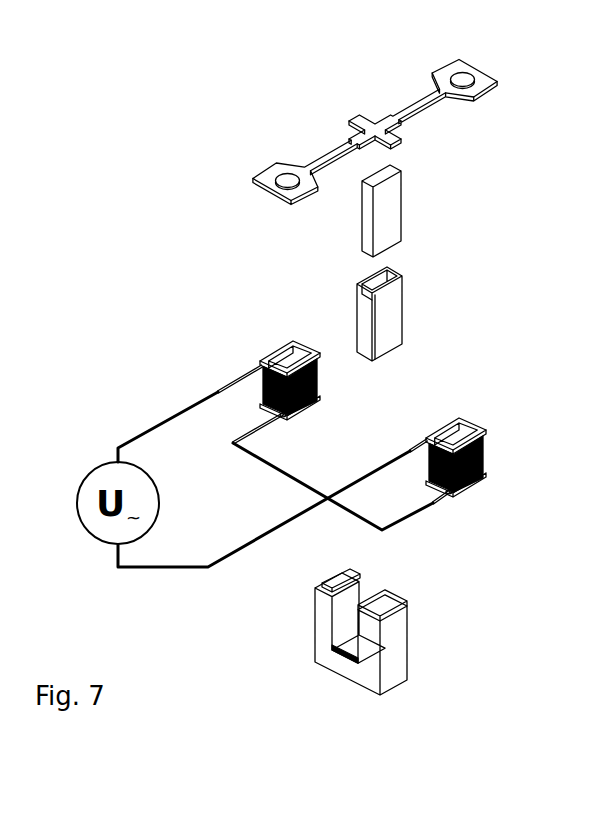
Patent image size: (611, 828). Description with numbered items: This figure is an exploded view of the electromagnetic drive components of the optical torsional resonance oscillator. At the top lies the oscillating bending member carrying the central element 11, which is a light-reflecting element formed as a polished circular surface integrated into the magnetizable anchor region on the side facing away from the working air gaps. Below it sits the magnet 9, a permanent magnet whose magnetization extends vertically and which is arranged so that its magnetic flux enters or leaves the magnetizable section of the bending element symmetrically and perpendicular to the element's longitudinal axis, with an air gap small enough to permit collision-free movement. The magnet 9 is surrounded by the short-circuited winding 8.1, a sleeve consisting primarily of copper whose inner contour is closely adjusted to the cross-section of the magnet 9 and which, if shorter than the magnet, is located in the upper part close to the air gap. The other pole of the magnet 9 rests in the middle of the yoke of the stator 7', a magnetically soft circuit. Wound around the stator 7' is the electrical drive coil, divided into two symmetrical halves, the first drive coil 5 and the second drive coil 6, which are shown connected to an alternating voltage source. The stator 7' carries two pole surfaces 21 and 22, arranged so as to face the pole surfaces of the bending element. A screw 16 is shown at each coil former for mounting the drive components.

The central element 11 is at (373, 124).
The magnet 9 is at (390, 228).
The short-circuited winding 8.1 is at (395, 312).
The screw 16 is at (287, 352).
The first drive coil 5 is at (263, 397).
The second drive coil 6 is at (483, 447).
The stator 7' is at (429, 634).
The free end of the pole shoe 21 is at (345, 572).
The free end of the pole shoe 22 is at (378, 586).